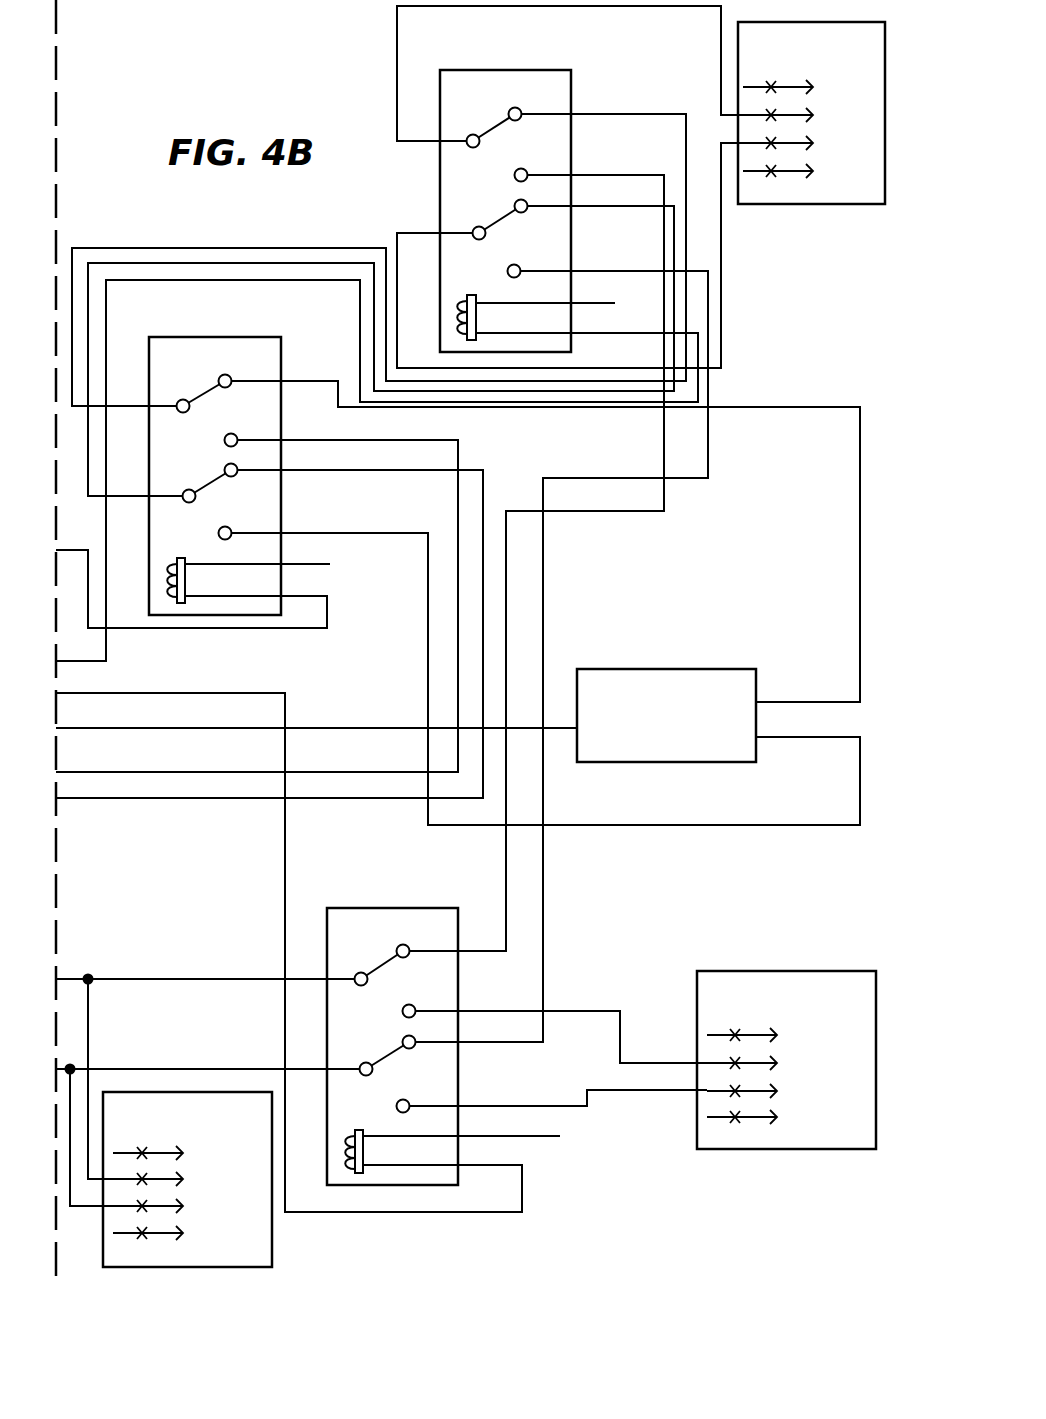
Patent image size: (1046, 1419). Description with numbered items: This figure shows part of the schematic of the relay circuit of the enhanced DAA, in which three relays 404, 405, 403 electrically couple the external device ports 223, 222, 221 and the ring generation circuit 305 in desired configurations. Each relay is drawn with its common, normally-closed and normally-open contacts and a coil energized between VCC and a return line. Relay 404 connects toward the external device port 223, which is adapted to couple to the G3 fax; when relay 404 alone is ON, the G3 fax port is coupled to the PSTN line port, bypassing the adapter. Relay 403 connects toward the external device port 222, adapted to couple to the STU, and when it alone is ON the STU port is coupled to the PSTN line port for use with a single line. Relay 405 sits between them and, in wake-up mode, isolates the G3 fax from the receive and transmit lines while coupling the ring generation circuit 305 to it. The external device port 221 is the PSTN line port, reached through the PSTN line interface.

The relay 404 is at (573, 85).
The relay 405 is at (265, 337).
The relay 403 is at (442, 908).
The ring generation circuit 305 is at (640, 669).
The external device port 223 is at (763, 204).
The external device port 222 is at (753, 971).
The external device port 221 is at (272, 1222).